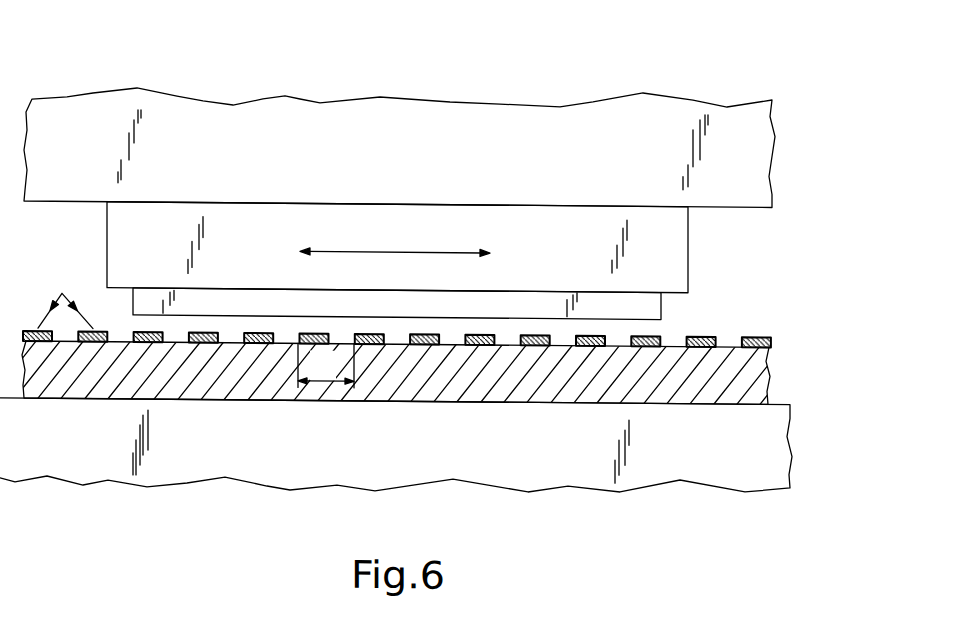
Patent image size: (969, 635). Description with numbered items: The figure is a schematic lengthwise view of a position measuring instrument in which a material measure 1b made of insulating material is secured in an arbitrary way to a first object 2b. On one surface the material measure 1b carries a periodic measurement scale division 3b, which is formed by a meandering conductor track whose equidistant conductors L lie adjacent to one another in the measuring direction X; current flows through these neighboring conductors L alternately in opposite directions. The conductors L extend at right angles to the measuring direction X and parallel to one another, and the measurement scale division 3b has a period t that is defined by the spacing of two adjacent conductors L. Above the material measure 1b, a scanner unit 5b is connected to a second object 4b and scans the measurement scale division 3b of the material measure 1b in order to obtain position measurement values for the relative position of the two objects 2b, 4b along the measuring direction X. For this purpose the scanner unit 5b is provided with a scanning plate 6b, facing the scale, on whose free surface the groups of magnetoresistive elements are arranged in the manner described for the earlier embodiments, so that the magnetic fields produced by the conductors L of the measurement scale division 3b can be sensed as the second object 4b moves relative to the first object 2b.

The second object 4b is at (672, 99).
The scanner unit 5b is at (683, 244).
The scanning plate 6b is at (657, 306).
The periodic measurement scale division 3b is at (760, 332).
The material measure 1b is at (758, 386).
The first object 2b is at (755, 471).
The measuring direction X is at (395, 235).
The equidistant conductors L is at (65, 295).
The period t is at (326, 365).